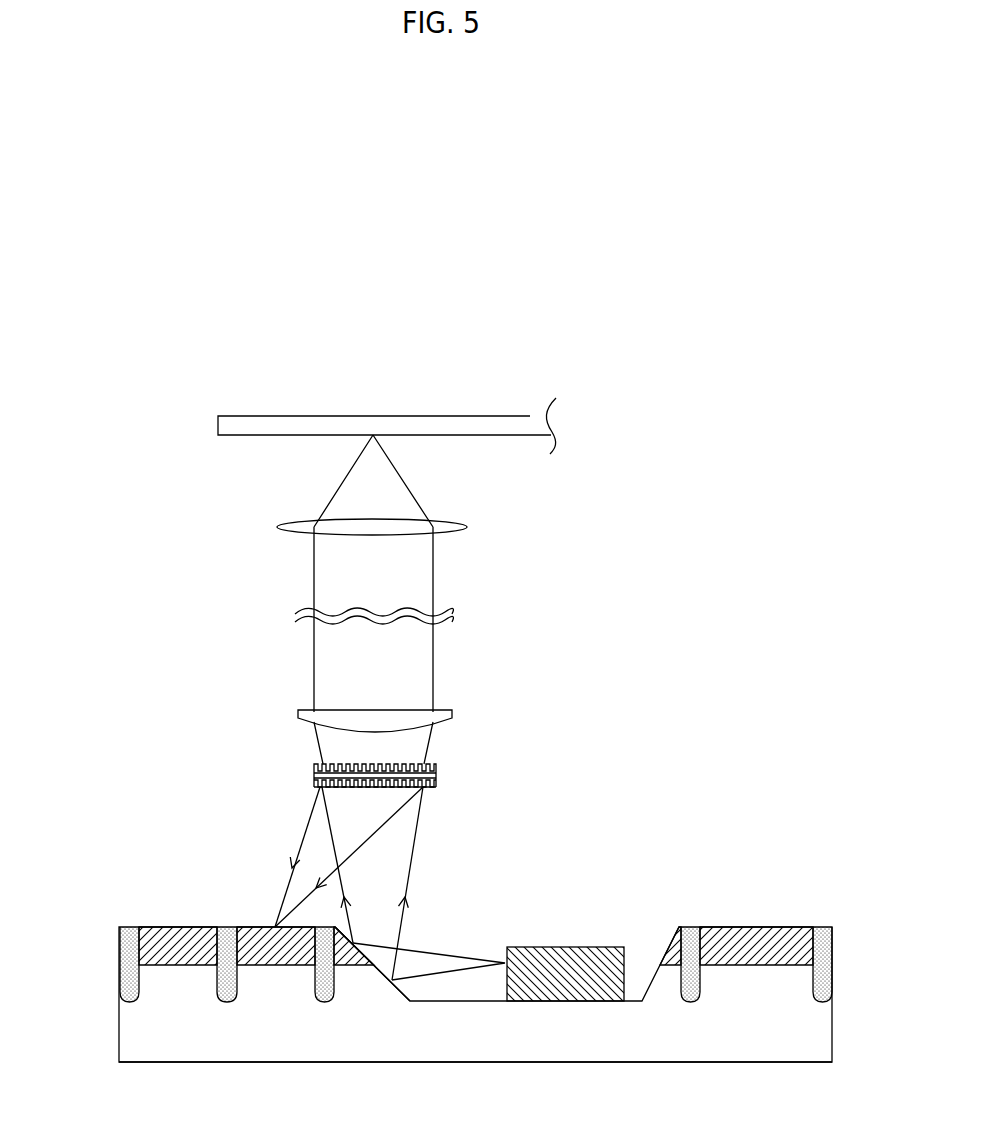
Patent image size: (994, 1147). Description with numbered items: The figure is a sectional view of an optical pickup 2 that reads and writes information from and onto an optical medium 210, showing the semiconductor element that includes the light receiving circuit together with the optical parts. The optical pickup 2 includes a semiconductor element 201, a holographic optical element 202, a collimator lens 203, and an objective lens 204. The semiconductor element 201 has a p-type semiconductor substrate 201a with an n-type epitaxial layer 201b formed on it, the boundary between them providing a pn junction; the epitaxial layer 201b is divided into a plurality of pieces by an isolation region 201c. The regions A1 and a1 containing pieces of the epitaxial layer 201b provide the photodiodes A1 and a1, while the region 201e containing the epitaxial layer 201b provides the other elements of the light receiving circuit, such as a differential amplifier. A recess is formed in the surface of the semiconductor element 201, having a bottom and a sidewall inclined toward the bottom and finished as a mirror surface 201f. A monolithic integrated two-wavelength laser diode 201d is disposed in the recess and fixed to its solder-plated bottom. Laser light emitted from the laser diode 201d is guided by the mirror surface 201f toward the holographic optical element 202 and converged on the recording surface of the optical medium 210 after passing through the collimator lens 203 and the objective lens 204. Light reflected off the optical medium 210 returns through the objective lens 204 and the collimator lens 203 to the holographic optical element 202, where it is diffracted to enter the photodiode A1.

The optical pickup 2 is at (456, 386).
The optical medium 210 is at (218, 416).
The objective lens 204 is at (467, 527).
The collimator lens 203 is at (452, 714).
The holographic optical element 202 is at (437, 771).
The semiconductor element 201 is at (114, 927).
The p-type semiconductor substrate 201a is at (486, 1040).
The n-type epitaxial layer 201b is at (178, 956).
The isolation region 201c is at (128, 1003).
The monolithic integrated two-wavelength laser diode 201d is at (545, 958).
The region 201e is at (813, 925).
The mirror surface 201f is at (398, 990).
The photodiode A1 is at (217, 925).
The photodiode a1 is at (315, 925).